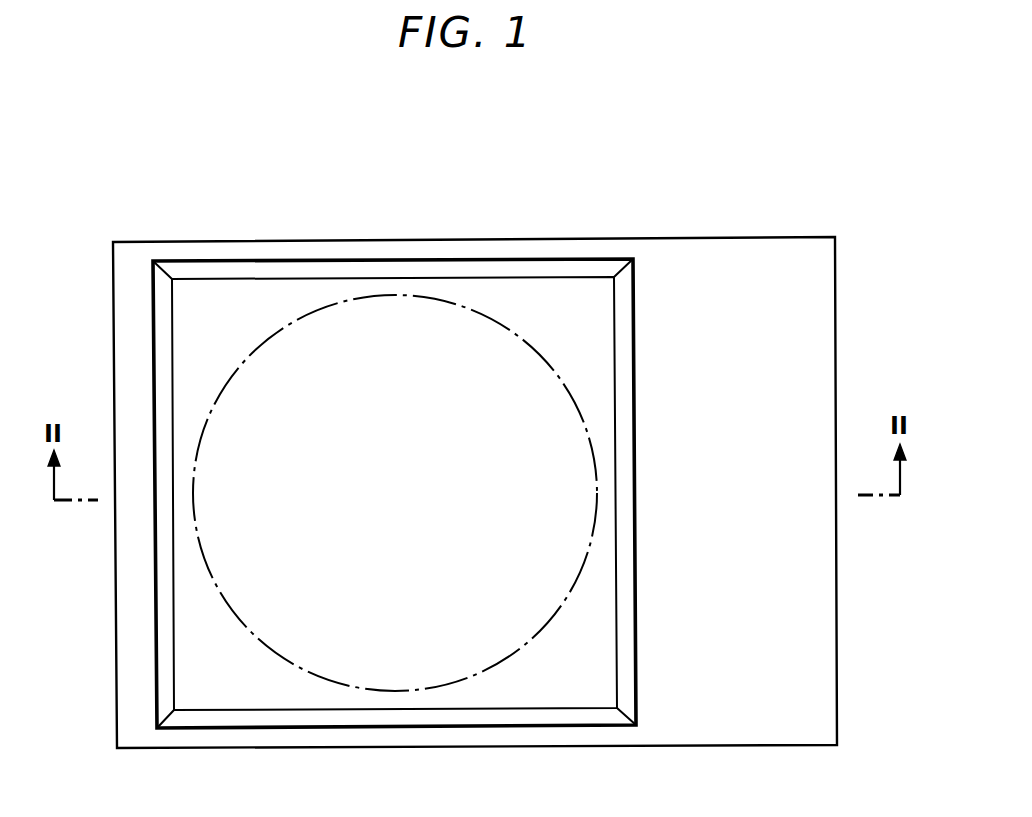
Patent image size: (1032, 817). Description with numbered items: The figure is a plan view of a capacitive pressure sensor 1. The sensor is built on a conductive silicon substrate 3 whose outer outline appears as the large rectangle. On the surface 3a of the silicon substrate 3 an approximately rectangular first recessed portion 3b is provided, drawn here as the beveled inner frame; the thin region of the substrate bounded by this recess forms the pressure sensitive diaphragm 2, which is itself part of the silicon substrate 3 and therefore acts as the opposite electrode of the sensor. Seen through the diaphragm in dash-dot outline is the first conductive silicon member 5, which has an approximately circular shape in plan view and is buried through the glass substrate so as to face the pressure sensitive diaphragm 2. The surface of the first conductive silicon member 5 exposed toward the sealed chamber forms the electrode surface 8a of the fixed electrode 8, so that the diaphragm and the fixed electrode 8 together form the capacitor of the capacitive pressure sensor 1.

The capacitive pressure sensor 1 is at (809, 190).
The pressure sensitive diaphragm 2 is at (565, 298).
The silicon substrate 3 is at (836, 292).
The surface of the silicon substrate 3a is at (810, 390).
The first recessed portion 3b is at (216, 272).
The first conductive silicon member 5 is at (333, 305).
The fixed electrode 8 is at (422, 400).
The electrode surface 8a is at (422, 400).